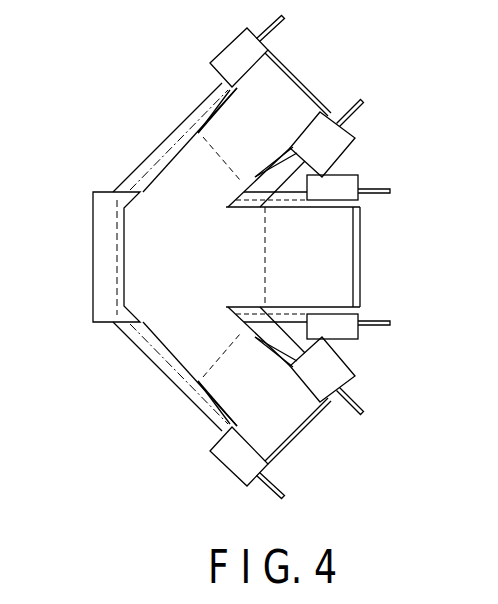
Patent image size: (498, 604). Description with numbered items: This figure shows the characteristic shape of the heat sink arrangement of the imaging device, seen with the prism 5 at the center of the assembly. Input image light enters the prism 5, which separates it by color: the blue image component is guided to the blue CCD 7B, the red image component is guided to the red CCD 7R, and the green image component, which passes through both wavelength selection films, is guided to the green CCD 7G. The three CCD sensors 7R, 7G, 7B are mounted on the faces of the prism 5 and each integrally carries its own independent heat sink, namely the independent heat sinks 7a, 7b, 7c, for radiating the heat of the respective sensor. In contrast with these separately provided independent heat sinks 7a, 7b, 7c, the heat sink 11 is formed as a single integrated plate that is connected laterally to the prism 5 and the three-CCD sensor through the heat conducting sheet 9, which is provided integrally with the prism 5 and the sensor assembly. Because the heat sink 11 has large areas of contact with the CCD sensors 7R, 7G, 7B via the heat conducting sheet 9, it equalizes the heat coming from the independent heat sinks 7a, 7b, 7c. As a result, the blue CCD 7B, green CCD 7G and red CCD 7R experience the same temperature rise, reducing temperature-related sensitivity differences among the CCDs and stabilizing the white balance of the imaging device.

The prism 5 is at (97, 232).
The heat conducting sheet 9 is at (117, 293).
The heat sink 11 is at (187, 303).
The independent heat sink 7a is at (243, 72).
The blue CCD 7B is at (338, 136).
The independent heat sink 7b is at (333, 197).
The green CCD 7G is at (362, 207).
The independent heat sink 7c is at (318, 380).
The red CCD 7R is at (356, 388).